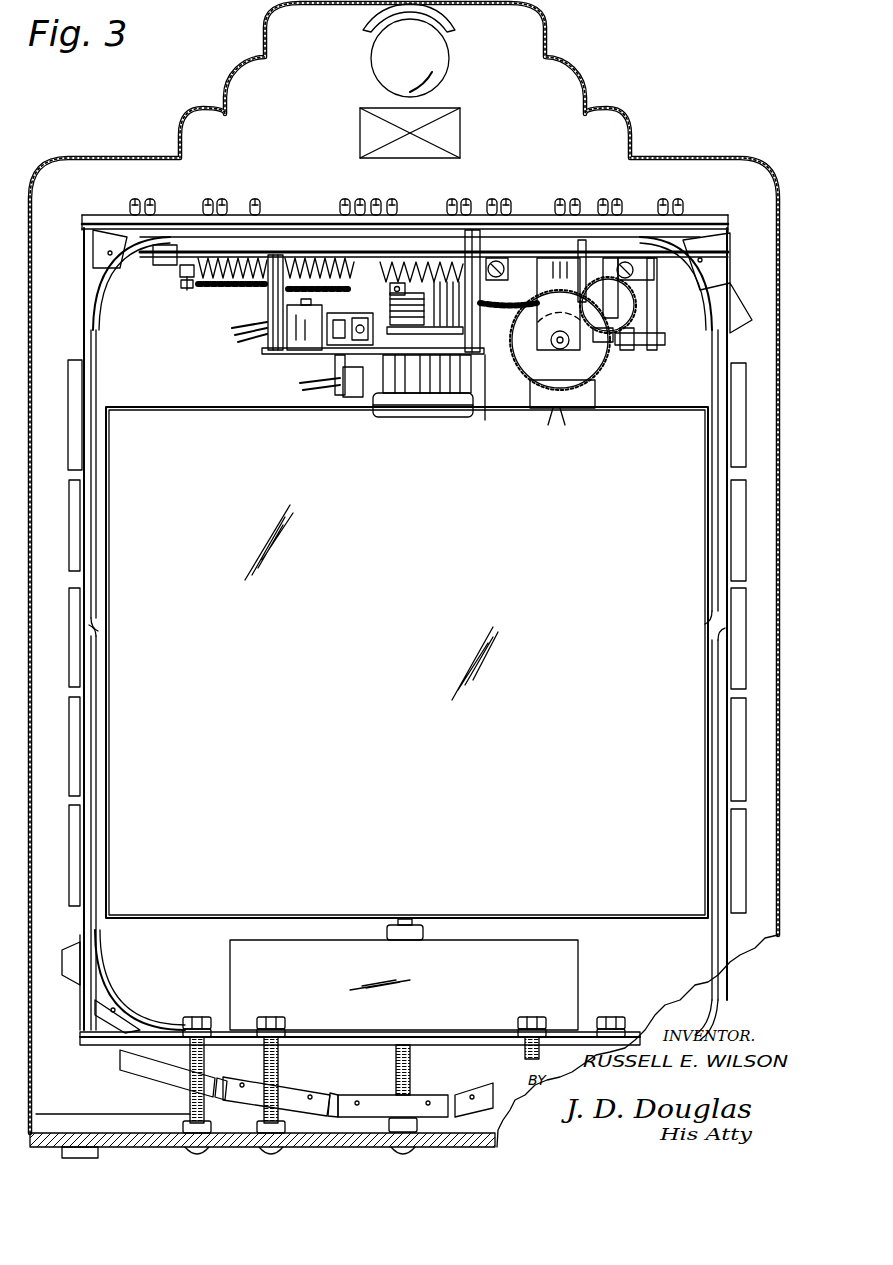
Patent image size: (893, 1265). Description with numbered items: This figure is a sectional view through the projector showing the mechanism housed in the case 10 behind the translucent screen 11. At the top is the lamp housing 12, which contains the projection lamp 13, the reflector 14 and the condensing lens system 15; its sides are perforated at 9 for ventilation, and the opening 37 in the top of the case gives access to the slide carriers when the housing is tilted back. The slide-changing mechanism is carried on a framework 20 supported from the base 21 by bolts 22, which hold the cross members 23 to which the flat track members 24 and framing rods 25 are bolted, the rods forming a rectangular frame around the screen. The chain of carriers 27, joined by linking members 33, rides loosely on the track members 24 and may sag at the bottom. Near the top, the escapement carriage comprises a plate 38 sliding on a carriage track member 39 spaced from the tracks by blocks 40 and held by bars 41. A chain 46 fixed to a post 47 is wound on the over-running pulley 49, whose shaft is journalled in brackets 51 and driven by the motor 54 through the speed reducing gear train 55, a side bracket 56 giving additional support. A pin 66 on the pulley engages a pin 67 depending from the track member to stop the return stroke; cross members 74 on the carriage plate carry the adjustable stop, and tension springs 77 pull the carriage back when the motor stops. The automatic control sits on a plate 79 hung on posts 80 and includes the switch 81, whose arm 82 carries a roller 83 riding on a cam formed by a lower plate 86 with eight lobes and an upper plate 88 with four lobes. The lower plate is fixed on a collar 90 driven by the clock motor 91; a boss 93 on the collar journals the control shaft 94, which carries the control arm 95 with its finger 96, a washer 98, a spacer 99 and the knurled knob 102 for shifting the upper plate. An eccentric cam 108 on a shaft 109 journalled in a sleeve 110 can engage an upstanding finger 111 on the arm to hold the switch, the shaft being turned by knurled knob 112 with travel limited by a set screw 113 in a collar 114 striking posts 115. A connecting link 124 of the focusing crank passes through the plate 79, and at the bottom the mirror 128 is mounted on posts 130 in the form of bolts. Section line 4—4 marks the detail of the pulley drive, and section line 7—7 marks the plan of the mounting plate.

The ventilation perforations 9 is at (203, 105).
The case 10 is at (676, 155).
The translucent screen 11 is at (657, 897).
The lamp housing 12 is at (562, 20).
The projection lamp 13 is at (375, 60).
The reflector 14 is at (457, 20).
The condensing lens system 15 is at (452, 124).
The framework 20 is at (102, 944).
The base 21 is at (93, 1120).
The bolts 22 is at (192, 1090).
The cross members 23 is at (182, 1018).
The flat track members 24 is at (108, 298).
The framing rods 25 is at (730, 247).
The carrier 27 is at (127, 233).
The linking member 33 is at (68, 157).
The opening 37 is at (553, 157).
The carriage plate 38 is at (135, 240).
The carriage track member 39 is at (697, 227).
The blocks 40 is at (620, 212).
The bars 41 is at (172, 262).
The chain 46 is at (210, 287).
The post 47 is at (195, 272).
The over-running pulley 49 is at (580, 387).
The brackets 51 is at (620, 413).
The motor 54 is at (563, 400).
The speed reducing gear train 55 is at (620, 300).
The side bracket 56 is at (657, 310).
The pin 66 is at (625, 358).
The pin 67 is at (583, 262).
The cross members 74 is at (170, 255).
The tension springs 77 is at (195, 250).
The control plate 79 is at (262, 352).
The posts 80 is at (282, 350).
The switch 81 is at (278, 385).
The arm 82 is at (322, 400).
The roller 83 is at (345, 400).
The lower cam plate 86 is at (403, 417).
The upper cam plate 88 is at (315, 325).
The collar 90 is at (415, 400).
The clock motor 91 is at (350, 392).
The boss 93 is at (428, 405).
The control shaft 94 is at (470, 262).
The control arm 95 is at (478, 255).
The finger 96 is at (487, 350).
The washer 98 is at (505, 310).
The spacer 99 is at (455, 250).
The knurled knob 102 is at (452, 262).
The eccentric cam 108 is at (350, 250).
The shaft 109 is at (385, 262).
The sleeve 110 is at (280, 262).
The upstanding finger 111 is at (282, 388).
The knurled knob 112 is at (325, 262).
The set screw 113 is at (388, 250).
The collar 114 is at (338, 262).
The posts 115 is at (308, 262).
The connecting link 124 is at (398, 400).
The mirror 128 is at (568, 963).
The posts 130 is at (272, 1058).
The section line 4 is at (487, 200).
The section line 7 is at (267, 295).